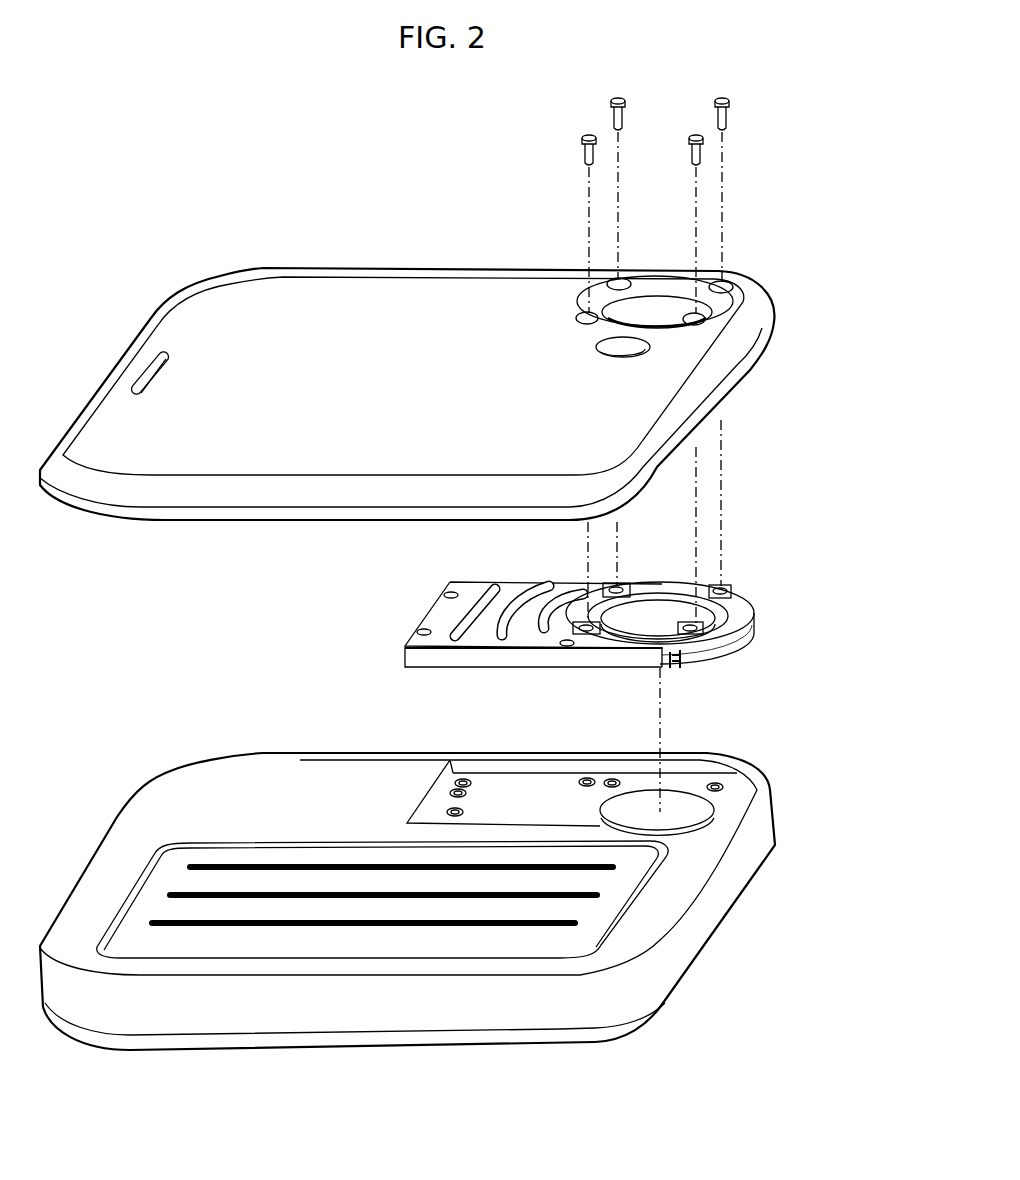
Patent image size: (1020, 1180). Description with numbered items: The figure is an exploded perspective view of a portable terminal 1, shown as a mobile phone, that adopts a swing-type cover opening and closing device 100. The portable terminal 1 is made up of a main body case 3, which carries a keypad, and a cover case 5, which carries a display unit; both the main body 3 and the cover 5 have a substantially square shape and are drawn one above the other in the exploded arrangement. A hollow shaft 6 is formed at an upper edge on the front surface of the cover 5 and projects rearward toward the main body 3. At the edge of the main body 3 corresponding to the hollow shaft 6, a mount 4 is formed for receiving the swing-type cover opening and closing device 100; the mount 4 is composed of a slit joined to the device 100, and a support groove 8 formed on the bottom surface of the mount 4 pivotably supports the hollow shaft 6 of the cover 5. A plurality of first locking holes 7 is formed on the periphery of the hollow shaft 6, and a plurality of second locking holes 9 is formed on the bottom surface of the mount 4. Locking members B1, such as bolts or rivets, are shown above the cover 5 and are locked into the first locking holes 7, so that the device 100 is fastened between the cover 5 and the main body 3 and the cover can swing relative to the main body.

The portable terminal 1 is at (406, 127).
The main body case 3 is at (723, 905).
The mount 4 is at (518, 795).
The cover case 5 is at (690, 360).
The hollow shaft 6 is at (660, 312).
The first locking holes 7 is at (727, 284).
The support groove 8 is at (683, 798).
The second locking holes 9 is at (586, 778).
The swing-type cover opening and closing device 100 is at (740, 581).
The locking members B1 is at (733, 114).